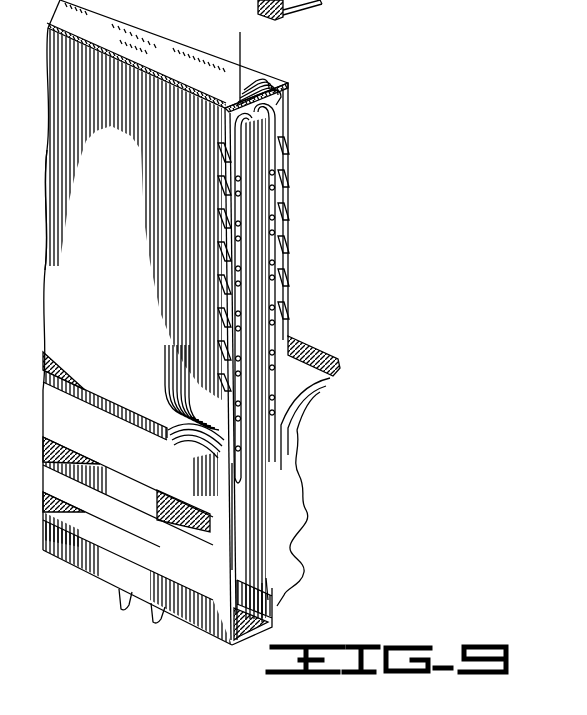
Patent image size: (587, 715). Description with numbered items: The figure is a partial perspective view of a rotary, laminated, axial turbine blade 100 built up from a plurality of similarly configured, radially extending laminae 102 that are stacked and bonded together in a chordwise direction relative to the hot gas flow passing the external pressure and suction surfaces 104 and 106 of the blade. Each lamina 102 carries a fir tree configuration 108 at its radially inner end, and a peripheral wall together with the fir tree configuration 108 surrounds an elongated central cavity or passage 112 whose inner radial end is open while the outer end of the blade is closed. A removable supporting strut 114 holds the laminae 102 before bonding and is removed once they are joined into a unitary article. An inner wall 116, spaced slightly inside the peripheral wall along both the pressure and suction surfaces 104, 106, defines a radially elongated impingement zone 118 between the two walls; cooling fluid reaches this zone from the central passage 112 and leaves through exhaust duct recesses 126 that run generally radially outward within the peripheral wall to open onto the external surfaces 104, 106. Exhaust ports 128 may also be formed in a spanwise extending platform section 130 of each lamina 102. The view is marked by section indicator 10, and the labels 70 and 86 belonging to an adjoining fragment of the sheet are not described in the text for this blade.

The section line 10- 10 is at (266, 40).
The connector 70 is at (355, 5).
The terminal block 86 is at (321, 8).
The rotary laminated axial turbine blade 100 is at (214, 338).
The laminae 102 is at (156, 611).
The external pressure surface 104 is at (292, 102).
The external suction surface 106 is at (72, 200).
The fir tree configuration 108 is at (300, 507).
The central cavity or passage 112 is at (266, 578).
The removable supporting strut 114 is at (232, 648).
The inner wall 116 is at (283, 281).
The impingement zone 118 is at (272, 262).
The exhaust duct recesses 126 is at (283, 203).
The exhaust ports 128 is at (302, 378).
The platform section 130 is at (298, 410).